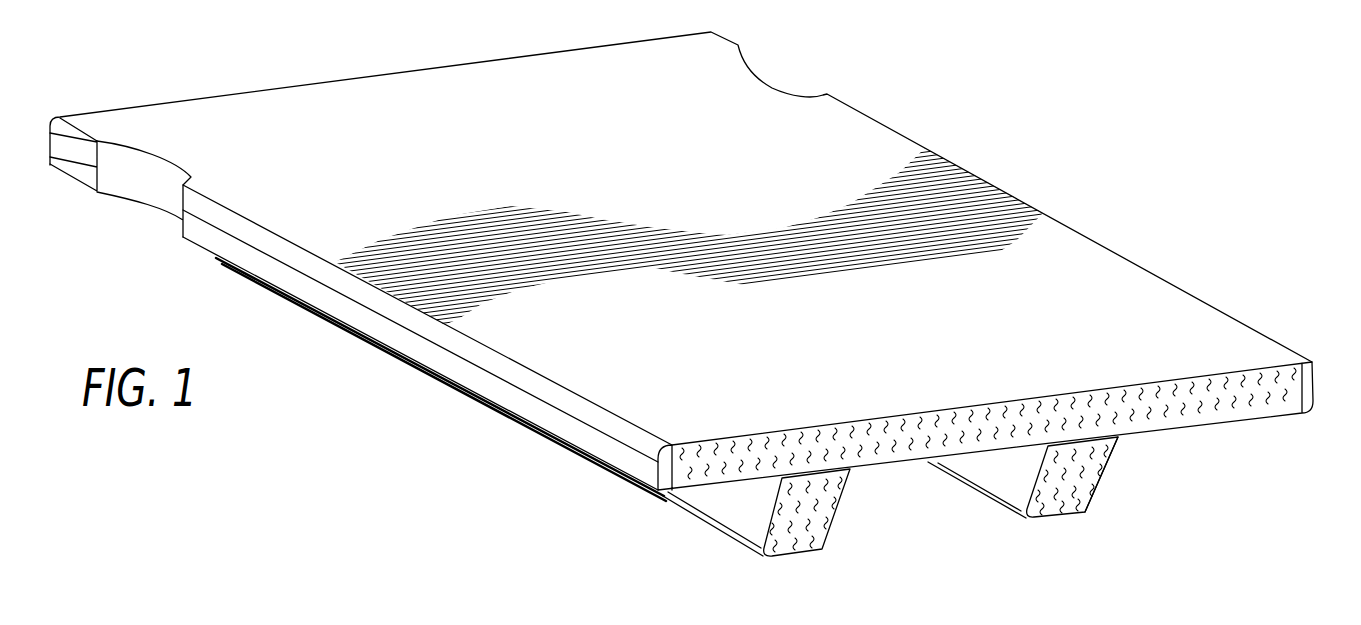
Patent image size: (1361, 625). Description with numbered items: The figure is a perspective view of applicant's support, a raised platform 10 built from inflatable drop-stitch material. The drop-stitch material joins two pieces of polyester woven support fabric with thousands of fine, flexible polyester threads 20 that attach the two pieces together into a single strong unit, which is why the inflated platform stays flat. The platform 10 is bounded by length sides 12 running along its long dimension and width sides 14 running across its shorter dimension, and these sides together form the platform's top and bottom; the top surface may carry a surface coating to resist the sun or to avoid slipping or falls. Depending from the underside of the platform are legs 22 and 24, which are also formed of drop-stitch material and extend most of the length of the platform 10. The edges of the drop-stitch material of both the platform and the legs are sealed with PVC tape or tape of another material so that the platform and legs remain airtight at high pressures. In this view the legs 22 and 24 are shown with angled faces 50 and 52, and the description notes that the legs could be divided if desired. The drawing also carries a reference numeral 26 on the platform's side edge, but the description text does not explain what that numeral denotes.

The platform 10 is at (1066, 160).
The length sides 12 is at (1177, 287).
The width sides 14 is at (1233, 405).
The flexible polyester threads 20 is at (1047, 507).
The leg 22 is at (837, 513).
The leg 24 is at (1103, 472).
The side edge 26 is at (492, 383).
The angled face 50 is at (783, 522).
The angled face 52 is at (1070, 482).